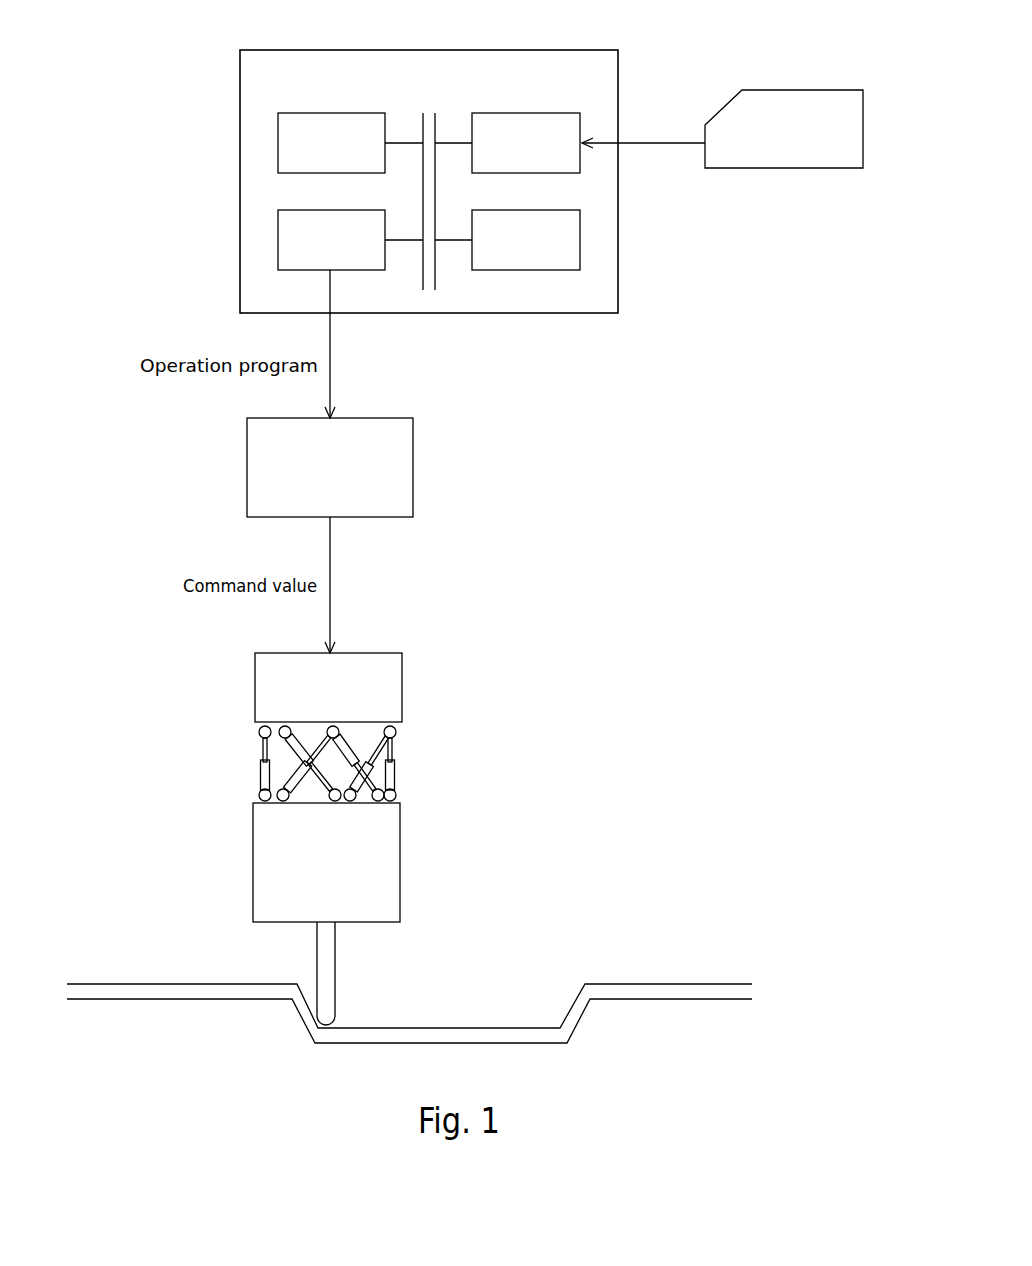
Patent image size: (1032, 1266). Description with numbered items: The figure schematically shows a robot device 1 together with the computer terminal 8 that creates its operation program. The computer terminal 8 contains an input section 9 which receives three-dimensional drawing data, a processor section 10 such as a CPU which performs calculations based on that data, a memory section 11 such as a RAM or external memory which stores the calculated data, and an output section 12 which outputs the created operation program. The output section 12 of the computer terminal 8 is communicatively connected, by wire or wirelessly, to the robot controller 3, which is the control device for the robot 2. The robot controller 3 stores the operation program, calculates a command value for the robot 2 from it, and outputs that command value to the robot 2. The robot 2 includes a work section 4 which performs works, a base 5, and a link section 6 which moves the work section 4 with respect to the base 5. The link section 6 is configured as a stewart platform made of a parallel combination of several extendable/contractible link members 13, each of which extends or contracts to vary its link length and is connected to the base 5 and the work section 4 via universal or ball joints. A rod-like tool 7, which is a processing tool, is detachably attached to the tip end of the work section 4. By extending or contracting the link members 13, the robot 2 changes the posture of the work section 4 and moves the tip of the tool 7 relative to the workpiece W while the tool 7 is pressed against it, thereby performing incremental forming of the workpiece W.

The robot device 1 is at (208, 178).
The robot 2 is at (418, 640).
The robot controller 3 is at (413, 468).
The work section 4 is at (400, 862).
The base 5 is at (253, 690).
The link section 6 is at (227, 757).
The rod-like tool 7 is at (337, 968).
The computer terminal 8 is at (472, 50).
The input section 9 is at (530, 113).
The processor section 10 is at (338, 113).
The memory section 11 is at (560, 271).
The output section 12 is at (373, 271).
The extendable/contractible link member 13 is at (397, 773).
The workpiece W is at (665, 983).